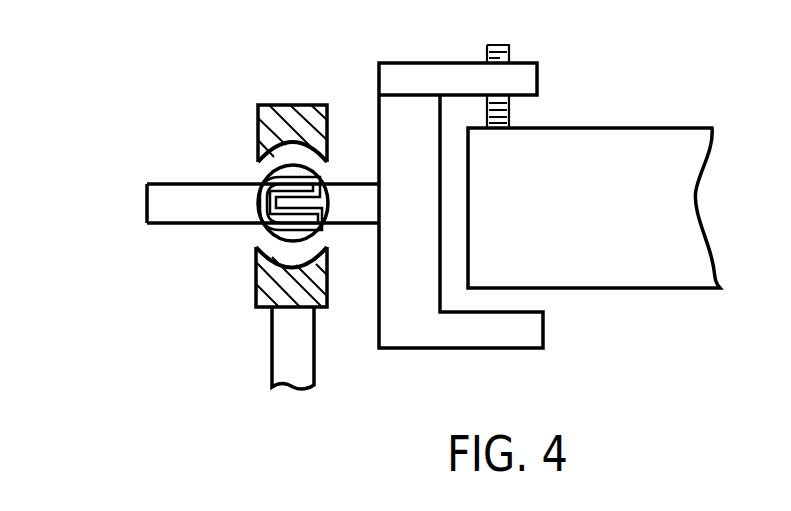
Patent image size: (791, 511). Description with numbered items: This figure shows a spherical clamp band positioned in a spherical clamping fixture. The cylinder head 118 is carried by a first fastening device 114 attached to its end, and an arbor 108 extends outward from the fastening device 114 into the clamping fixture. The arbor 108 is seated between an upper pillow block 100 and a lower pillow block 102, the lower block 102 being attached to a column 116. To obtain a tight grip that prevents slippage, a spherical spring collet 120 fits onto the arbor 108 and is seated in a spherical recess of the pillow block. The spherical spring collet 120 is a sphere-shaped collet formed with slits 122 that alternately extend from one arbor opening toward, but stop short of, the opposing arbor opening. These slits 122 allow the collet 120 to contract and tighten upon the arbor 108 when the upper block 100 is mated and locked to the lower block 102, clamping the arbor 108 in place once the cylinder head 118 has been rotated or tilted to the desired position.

The upper pillow block 100 is at (307, 107).
The lower pillow block 102 is at (252, 297).
The arbor 108 is at (162, 197).
The first fastening device 114 is at (543, 330).
The column 116 is at (275, 348).
The cylinder head 118 is at (645, 138).
The spherical spring collet 120 is at (266, 233).
The slits 122 is at (271, 178).